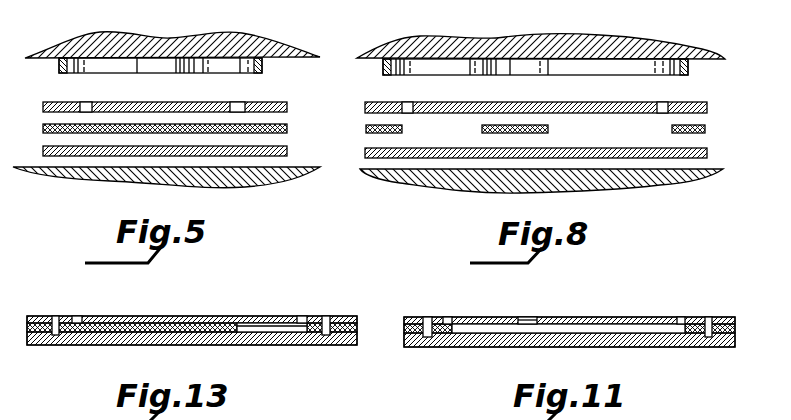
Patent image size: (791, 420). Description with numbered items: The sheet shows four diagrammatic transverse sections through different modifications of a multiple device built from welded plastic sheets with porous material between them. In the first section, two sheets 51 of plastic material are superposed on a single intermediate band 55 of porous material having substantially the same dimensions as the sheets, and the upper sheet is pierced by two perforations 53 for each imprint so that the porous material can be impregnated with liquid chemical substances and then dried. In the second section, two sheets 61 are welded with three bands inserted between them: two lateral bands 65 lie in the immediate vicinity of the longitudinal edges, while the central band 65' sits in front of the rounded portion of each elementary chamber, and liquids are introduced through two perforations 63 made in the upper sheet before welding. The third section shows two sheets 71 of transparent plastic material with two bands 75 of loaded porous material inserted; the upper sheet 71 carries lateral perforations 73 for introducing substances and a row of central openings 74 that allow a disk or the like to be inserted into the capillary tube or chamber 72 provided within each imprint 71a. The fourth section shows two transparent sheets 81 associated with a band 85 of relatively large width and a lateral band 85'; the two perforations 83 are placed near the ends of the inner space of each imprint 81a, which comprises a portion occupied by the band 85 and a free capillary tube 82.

In FIG. 5, the sheet of plastic material 51 is at (287, 108).
In FIG. 5, the perforation 53 is at (85, 101).
In FIG. 5, the band of porous material 55 is at (43, 128).
In FIG. 8, the sheet of plastic material 61 is at (606, 147).
In FIG. 8, the perforation 63 is at (406, 101).
In FIG. 8, the lateral band of porous material 65 is at (542, 128).
In FIG. 8, the central band of porous material 65' is at (493, 128).
In FIG. 11, the sheet of transparent plastic material 71 is at (622, 320).
In FIG. 11, the imprint 71a is at (429, 317).
In FIG. 11, the capillary tube or chamber 72 is at (500, 333).
In FIG. 11, the lateral perforation 73 is at (450, 317).
In FIG. 11, the central opening 74 is at (565, 317).
In FIG. 11, the band of loaded porous material 75 is at (445, 333).
In FIG. 13, the sheet of transparent plastic material 81 is at (178, 317).
In FIG. 13, the imprint 81a is at (55, 316).
In FIG. 13, the free capillary tube 82 is at (252, 322).
In FIG. 13, the perforation 83 is at (77, 316).
In FIG. 13, the band of porous material 85 is at (192, 310).
In FIG. 13, the lateral band 85' is at (309, 349).